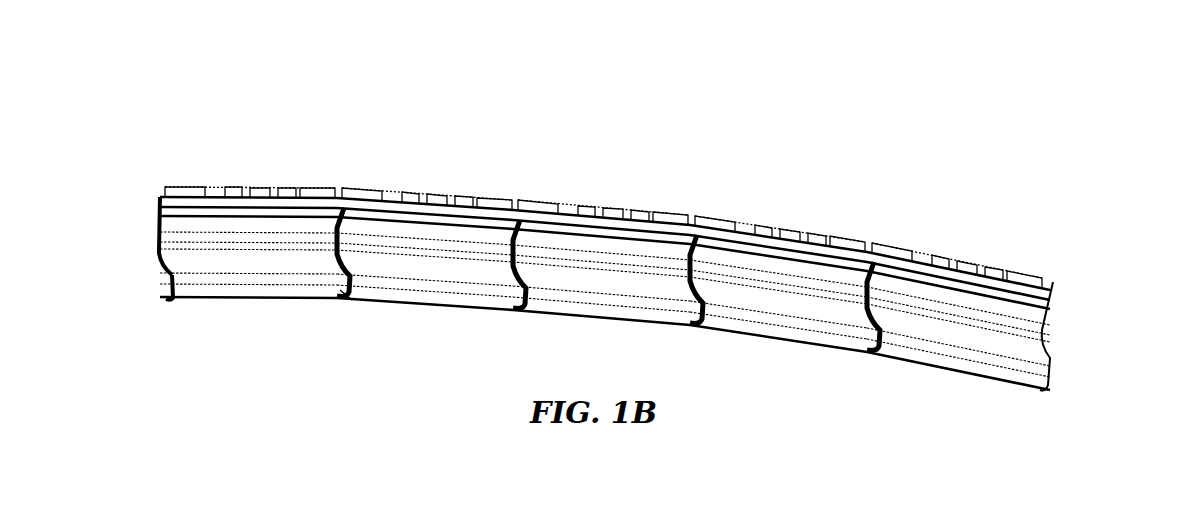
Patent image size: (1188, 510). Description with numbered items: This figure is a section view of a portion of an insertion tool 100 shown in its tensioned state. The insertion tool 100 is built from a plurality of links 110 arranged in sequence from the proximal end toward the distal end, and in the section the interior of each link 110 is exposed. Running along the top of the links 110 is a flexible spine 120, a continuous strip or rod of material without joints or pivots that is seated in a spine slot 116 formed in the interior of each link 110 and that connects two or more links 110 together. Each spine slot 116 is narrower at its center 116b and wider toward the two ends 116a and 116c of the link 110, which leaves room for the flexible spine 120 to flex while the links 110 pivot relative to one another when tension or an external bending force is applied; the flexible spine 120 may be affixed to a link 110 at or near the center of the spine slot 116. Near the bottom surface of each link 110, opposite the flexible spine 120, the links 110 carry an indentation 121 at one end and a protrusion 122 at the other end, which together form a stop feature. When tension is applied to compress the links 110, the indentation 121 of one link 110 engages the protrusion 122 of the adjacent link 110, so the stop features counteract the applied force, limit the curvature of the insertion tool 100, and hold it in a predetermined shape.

The insertion tool 100 is at (1003, 158).
The link 110 is at (253, 187).
The flexible spine 120 is at (350, 190).
The spine slot 116 is at (160, 200).
The end of spine slot 116a is at (167, 193).
The center of spine slot 116b is at (241, 187).
The end of spine slot 116c is at (320, 192).
The indentation 121 is at (173, 287).
The protrusion 122 is at (350, 277).